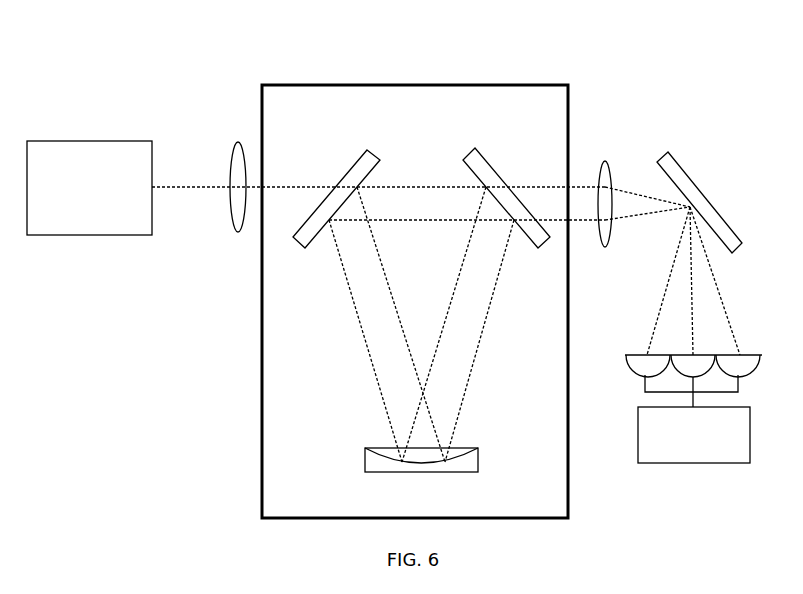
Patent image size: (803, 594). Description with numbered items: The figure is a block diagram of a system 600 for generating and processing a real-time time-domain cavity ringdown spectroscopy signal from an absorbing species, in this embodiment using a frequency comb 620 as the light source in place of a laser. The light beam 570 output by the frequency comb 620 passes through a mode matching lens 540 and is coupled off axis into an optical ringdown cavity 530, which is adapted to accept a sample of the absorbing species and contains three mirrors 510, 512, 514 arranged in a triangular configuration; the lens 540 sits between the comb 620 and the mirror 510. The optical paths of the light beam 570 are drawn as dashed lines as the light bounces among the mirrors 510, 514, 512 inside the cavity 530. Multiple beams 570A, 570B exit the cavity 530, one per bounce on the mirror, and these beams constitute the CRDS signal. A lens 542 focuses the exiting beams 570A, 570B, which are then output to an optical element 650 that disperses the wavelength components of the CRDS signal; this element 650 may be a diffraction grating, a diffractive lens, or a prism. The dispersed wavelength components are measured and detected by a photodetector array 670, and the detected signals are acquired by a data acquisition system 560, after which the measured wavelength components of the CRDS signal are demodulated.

The system 600 is at (628, 63).
The frequency comb 620 is at (78, 138).
The mode matching lens 540 is at (230, 170).
The light beam 570 is at (192, 185).
The optical ringdown cavity 530 is at (262, 320).
The mirror 510 is at (377, 160).
The mirror 514 is at (477, 159).
The mirror 512 is at (475, 458).
The lens 542 is at (600, 248).
The CRDS signal beam 570A is at (622, 195).
The CRDS signal beam 570B is at (620, 222).
The optical element 650 is at (685, 172).
The photodetector array 670 is at (752, 343).
The data acquisition system 560 is at (662, 465).